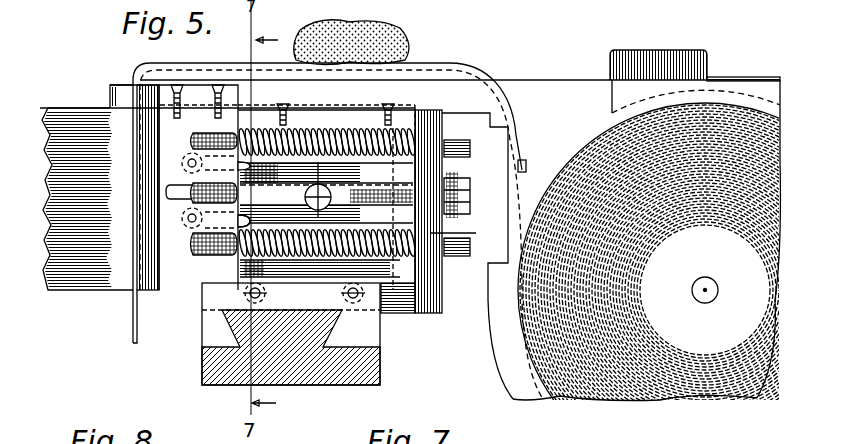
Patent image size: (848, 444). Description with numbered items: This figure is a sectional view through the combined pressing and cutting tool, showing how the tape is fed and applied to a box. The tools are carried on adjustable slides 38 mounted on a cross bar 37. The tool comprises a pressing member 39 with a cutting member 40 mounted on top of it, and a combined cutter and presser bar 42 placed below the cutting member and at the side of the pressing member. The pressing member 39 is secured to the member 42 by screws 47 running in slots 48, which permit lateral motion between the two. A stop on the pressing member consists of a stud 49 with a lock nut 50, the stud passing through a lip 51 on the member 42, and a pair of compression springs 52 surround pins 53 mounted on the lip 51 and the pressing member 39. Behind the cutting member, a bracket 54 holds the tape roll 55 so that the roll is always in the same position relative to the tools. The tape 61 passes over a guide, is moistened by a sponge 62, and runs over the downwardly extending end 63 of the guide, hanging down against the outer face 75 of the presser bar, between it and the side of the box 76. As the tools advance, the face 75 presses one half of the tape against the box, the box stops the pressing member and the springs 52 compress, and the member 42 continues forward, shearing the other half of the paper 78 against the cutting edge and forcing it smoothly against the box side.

The cross bar 37 is at (330, 347).
The adjustable slides 38 is at (357, 331).
The pressing member 39 is at (177, 152).
The cutting member 40 is at (195, 95).
The combined cutter and presser bar 42 is at (348, 123).
The screws 47 is at (190, 172).
The slots 48 is at (245, 222).
The stud 49 is at (376, 182).
The lock nut 50 is at (464, 206).
The lip 51 is at (465, 241).
The compression springs 52 is at (405, 232).
The pins 53 is at (430, 172).
The bracket 54 is at (547, 92).
The tape roll 55 is at (698, 238).
The tape 61 is at (522, 168).
The sponge 62 is at (377, 40).
The downwardly extending end 63 is at (137, 75).
The outer face 75 is at (175, 147).
The box 76 is at (98, 250).
The other half of the paper 78 is at (133, 303).